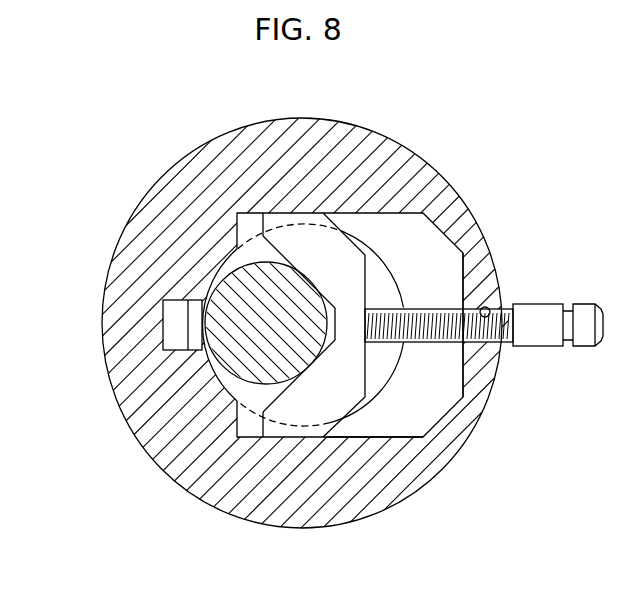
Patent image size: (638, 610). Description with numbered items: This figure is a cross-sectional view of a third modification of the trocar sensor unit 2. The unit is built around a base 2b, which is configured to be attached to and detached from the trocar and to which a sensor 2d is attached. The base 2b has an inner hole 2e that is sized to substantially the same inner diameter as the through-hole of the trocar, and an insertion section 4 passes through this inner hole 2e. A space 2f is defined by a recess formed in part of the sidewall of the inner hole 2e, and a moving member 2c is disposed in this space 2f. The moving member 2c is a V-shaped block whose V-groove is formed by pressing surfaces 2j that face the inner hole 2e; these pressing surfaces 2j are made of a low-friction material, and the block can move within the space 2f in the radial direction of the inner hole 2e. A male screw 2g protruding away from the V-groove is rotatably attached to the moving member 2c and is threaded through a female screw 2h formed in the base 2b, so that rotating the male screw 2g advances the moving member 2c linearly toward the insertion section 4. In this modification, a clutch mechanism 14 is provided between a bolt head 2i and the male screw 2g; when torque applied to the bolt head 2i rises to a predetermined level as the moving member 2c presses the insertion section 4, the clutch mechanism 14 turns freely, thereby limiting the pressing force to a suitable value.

The trocar sensor unit 2 is at (528, 163).
The base 2b is at (426, 163).
The moving member 2c is at (353, 400).
The sensor 2d is at (162, 333).
The inner hole 2e is at (392, 284).
The space 2f is at (410, 425).
The male screw 2g is at (423, 343).
The female screw 2h is at (482, 303).
The bolt head 2i is at (585, 303).
The pressing surfaces 2j is at (251, 212).
The insertion section 4 is at (240, 268).
The clutch mechanism 14 is at (537, 303).